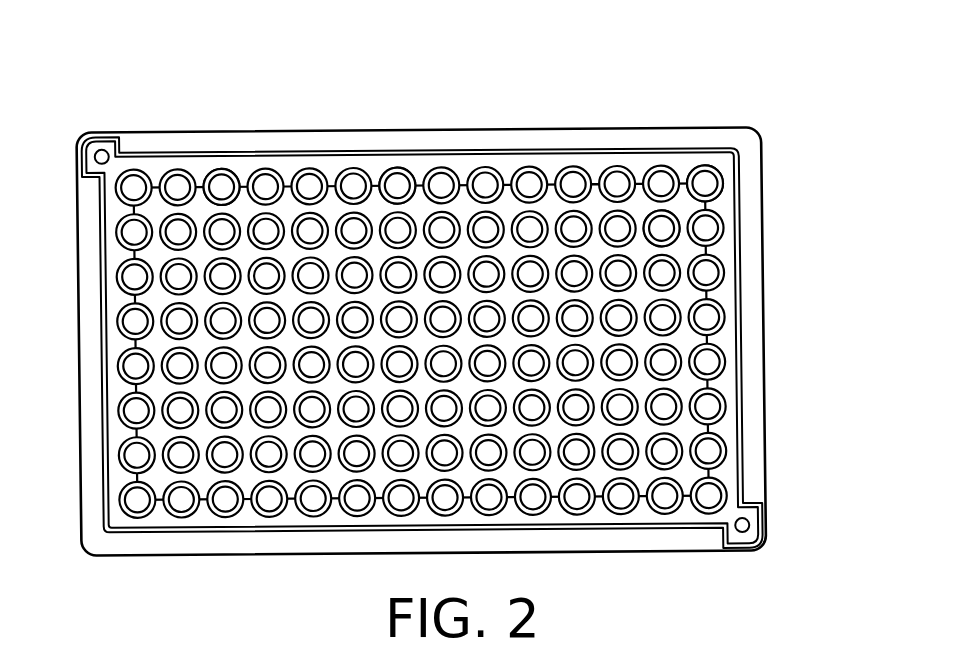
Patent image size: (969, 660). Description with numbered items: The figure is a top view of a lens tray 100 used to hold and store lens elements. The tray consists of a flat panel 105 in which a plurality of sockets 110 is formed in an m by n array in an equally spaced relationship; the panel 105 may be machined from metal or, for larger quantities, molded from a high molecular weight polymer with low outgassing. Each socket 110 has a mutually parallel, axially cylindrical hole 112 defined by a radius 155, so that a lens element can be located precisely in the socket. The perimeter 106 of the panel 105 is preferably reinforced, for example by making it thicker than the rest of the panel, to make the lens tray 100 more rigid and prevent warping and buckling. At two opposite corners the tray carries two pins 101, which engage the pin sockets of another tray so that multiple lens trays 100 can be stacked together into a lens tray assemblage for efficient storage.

The lens tray 100 is at (718, 90).
The pins 101 is at (104, 160).
The panel 105 is at (597, 184).
The perimeter 106 is at (152, 173).
The sockets 110 is at (398, 168).
The cylindrical holes 112 is at (266, 184).
The radius 155 is at (666, 224).